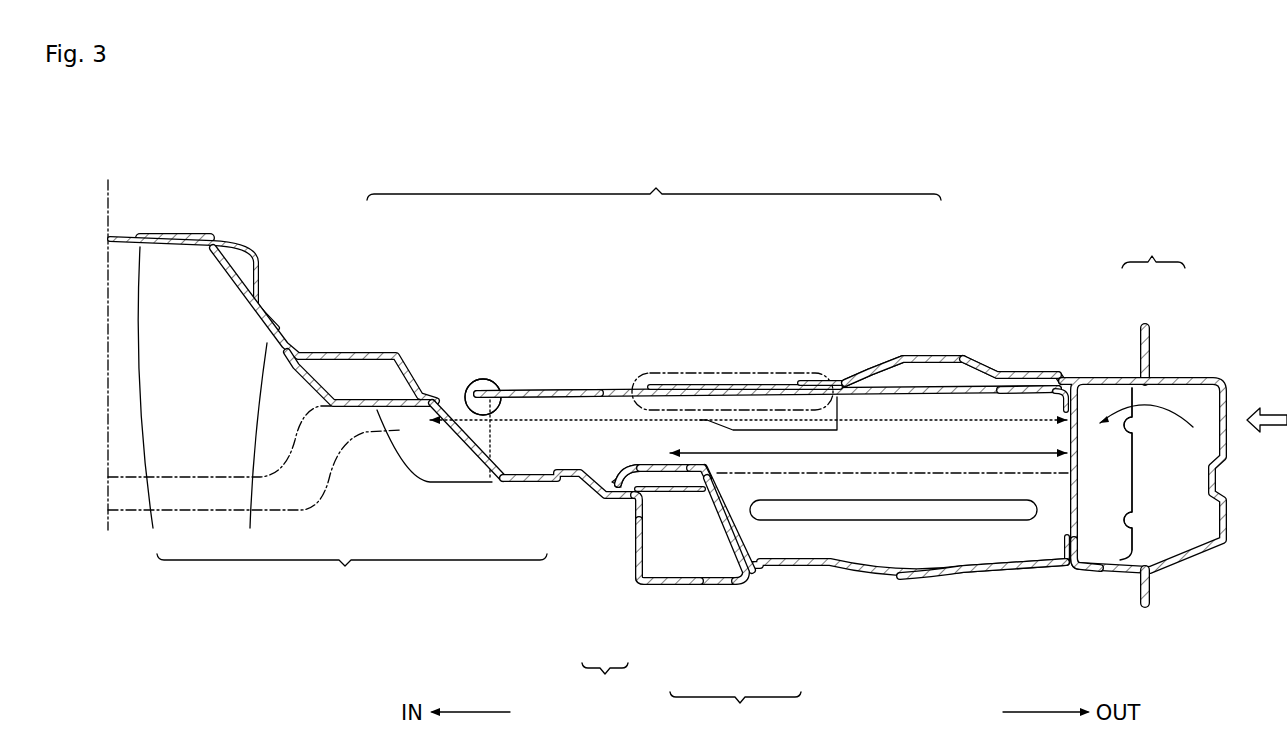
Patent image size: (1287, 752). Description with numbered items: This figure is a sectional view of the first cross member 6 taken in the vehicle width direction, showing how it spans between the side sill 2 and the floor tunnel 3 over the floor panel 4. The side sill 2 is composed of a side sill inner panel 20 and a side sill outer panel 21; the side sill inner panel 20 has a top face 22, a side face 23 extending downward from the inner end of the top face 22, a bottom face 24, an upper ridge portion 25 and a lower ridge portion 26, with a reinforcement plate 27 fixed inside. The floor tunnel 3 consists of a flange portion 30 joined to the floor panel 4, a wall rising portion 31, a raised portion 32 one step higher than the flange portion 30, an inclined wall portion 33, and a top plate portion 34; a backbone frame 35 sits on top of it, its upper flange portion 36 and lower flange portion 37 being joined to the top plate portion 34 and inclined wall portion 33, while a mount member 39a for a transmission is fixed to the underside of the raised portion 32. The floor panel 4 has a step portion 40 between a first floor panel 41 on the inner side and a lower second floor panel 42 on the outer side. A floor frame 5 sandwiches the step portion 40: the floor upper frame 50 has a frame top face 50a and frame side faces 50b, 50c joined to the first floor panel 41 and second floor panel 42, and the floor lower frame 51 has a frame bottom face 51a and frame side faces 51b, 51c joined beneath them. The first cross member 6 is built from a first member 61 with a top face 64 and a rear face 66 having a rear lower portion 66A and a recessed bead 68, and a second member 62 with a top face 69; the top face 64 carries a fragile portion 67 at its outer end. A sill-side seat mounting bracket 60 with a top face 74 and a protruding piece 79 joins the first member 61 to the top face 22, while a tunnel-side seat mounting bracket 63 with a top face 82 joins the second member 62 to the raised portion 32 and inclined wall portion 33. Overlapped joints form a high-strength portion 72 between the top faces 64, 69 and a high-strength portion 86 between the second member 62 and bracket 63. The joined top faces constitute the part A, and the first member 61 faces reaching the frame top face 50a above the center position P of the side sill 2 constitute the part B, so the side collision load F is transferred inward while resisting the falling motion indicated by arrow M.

The side sill 2 is at (1153, 251).
The side sill inner panel 20 is at (1140, 328).
The side sill outer panel 21 is at (1182, 377).
The top face 22 is at (1080, 378).
The side face 23 is at (1063, 520).
The bottom face 24 is at (1120, 555).
The upper ridge portion 25 is at (1060, 383).
The lower ridge portion 26 is at (1077, 565).
The reinforcement plate 27 is at (1133, 500).
The floor tunnel 3 is at (352, 575).
The flange portion 30 is at (537, 483).
The wall rising portion 31 is at (477, 406).
The raised portion 32 is at (353, 408).
The inclined wall portion 33 is at (252, 448).
The top plate portion 34 is at (152, 400).
The backbone frame 35 is at (252, 248).
The upper flange portion 36 is at (165, 233).
The lower flange portion 37 is at (272, 318).
The mount member 39a is at (197, 477).
The floor panel 4 is at (735, 711).
The step portion 40 is at (722, 515).
The first floor panel 41 is at (687, 493).
The second floor panel 42 is at (823, 570).
The floor frame 5 is at (605, 683).
The floor upper frame 50 is at (627, 550).
The frame top face 50a is at (670, 462).
The frame side face 50b is at (627, 465).
The frame side face 50c is at (720, 463).
The floor lower frame 51 is at (640, 590).
The frame bottom face 51a is at (675, 587).
The frame side face 51b is at (635, 530).
The frame side face 51c is at (740, 577).
The first cross member 6 is at (654, 182).
The sill-side seat mounting bracket 60 is at (937, 345).
The first member 61 is at (733, 385).
The second member 62 is at (555, 390).
The tunnel-side seat mounting bracket 63 is at (357, 340).
The top face 64 is at (773, 382).
The rear face 66 is at (900, 400).
The rear lower portion 66A is at (950, 550).
The fragile portion 67 is at (1030, 372).
The recessed bead 68 is at (888, 520).
The top face 69 is at (552, 378).
The high-strength portion 72 is at (650, 465).
The top face 74 is at (1018, 370).
The protruding piece 79 is at (1085, 377).
The top face 82 is at (467, 383).
The high-strength portion 86 is at (487, 380).
The part A is at (748, 409).
The part B is at (868, 443).
The center position P is at (1068, 473).
The arrow M is at (1149, 410).
The side collision load F is at (1267, 404).